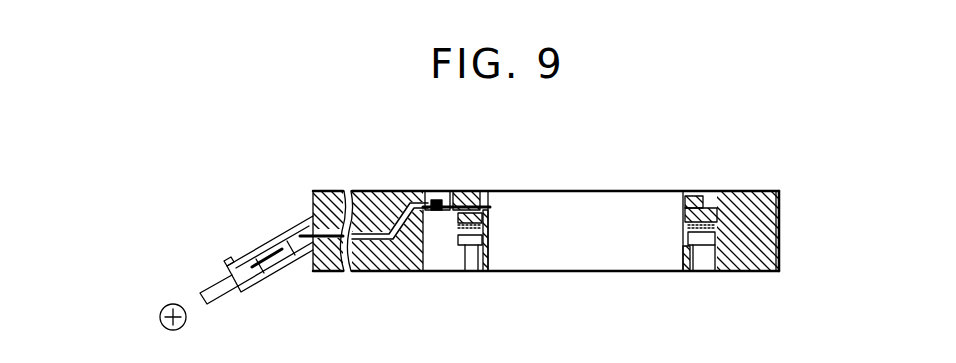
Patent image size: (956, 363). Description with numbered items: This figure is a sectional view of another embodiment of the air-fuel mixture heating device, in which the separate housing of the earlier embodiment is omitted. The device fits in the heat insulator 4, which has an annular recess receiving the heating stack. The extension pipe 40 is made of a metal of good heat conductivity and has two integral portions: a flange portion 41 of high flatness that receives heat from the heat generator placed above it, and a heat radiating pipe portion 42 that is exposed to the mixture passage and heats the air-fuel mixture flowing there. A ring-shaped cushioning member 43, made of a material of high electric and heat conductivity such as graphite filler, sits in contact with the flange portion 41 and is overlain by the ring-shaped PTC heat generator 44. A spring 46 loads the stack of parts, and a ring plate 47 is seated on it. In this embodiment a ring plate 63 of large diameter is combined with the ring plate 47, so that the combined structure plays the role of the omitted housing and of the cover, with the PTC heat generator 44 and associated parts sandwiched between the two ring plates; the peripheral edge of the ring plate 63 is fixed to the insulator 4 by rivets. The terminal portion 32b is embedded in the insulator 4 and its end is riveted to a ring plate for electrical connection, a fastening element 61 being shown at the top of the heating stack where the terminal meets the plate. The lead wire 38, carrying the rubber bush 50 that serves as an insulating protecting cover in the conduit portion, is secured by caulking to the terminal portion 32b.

The heat insulator 4 is at (368, 191).
The terminal portion 32b is at (365, 271).
The clamp block 61 is at (443, 191).
The ring plate 47 is at (477, 192).
The PTC heat generator 44 is at (484, 216).
The extension pipe 40 is at (545, 254).
The flange portion 41 is at (462, 245).
The ring plate 63 is at (471, 247).
The heat radiating pipe portion 42 is at (490, 255).
The cushioning member 43 is at (702, 208).
The spring 46 is at (705, 246).
The rubber bush 50 is at (279, 272).
The lead wire 38 is at (218, 300).